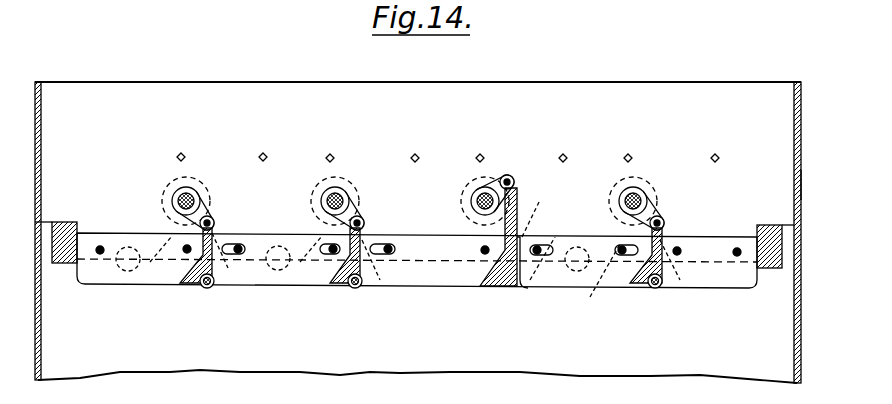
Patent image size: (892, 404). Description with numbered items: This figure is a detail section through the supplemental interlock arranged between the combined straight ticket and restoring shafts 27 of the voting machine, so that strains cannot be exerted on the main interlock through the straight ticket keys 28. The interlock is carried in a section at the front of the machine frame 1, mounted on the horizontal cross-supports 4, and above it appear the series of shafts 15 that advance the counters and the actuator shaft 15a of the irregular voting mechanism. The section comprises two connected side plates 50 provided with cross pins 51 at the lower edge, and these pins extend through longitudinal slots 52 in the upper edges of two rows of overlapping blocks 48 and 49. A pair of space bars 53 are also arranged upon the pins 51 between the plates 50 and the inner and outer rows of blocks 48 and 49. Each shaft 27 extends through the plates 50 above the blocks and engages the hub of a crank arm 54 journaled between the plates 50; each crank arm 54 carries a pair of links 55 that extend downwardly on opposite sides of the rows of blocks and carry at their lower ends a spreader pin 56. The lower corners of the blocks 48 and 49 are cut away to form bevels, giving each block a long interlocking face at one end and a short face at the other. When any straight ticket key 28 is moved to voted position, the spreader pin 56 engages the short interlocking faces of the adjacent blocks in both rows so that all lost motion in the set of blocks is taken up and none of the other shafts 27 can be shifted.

The frame 1 is at (40, 118).
The cross-supports 4 is at (65, 222).
The shafts 15 is at (327, 155).
The actuator shaft 15a is at (182, 152).
The locking and restoring shafts 27 is at (322, 201).
The straight ticket keys 28 is at (161, 205).
The outer row of blocks 48 is at (168, 272).
The inner row of blocks 49 is at (197, 284).
The plates 50 is at (781, 185).
The cross pins 51 is at (183, 249).
The slots 52 is at (240, 256).
The space bars 53 is at (455, 264).
The crank arm 54 is at (210, 217).
The links 55 is at (213, 229).
The spreader pin 56 is at (213, 285).